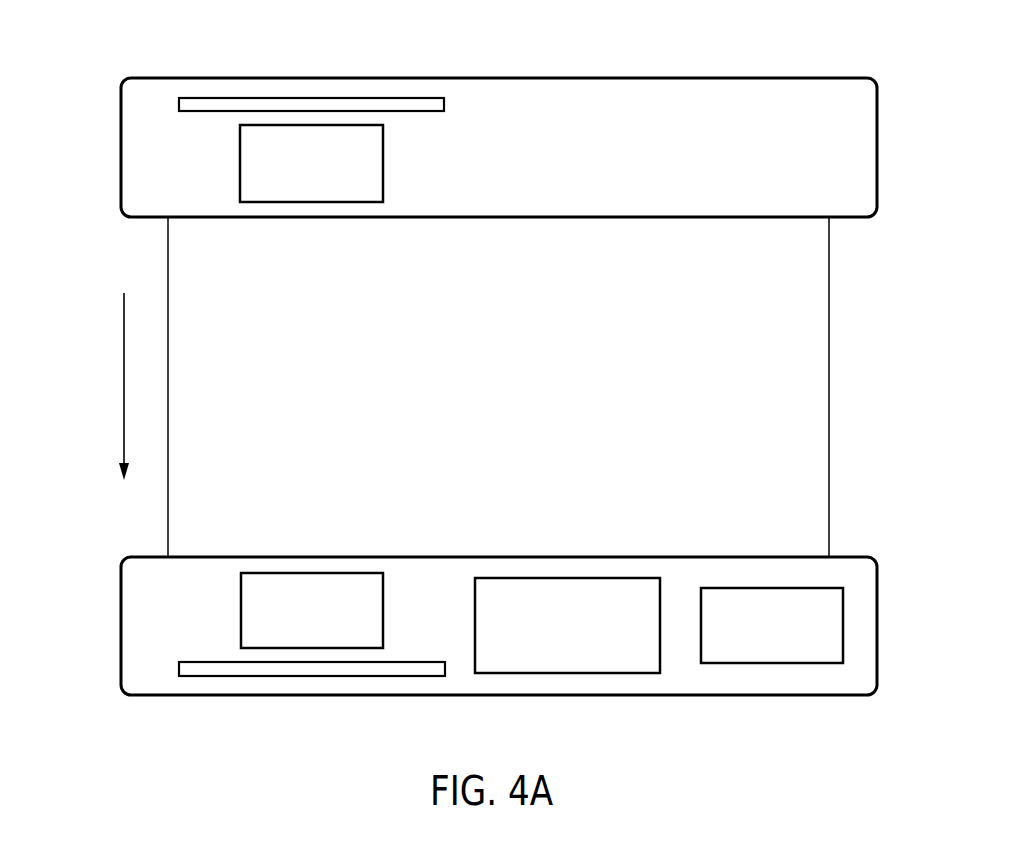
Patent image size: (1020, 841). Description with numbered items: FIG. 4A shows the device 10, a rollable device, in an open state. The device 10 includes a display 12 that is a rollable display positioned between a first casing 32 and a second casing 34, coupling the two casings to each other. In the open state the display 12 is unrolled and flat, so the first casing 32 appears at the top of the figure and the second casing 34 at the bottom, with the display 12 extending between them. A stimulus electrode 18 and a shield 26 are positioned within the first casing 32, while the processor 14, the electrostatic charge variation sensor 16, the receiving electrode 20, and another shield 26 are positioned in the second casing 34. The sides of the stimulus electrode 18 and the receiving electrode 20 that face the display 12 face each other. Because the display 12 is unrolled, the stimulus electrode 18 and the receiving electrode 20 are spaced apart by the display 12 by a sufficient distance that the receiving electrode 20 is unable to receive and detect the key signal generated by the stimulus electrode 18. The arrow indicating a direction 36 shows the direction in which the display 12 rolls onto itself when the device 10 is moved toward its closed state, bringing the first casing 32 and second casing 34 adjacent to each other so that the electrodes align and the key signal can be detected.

The device 10 is at (67, 78).
The display 12 is at (829, 370).
The processor 14 is at (770, 663).
The electrostatic charge variation sensor 16 is at (565, 673).
The stimulus electrode 18 is at (282, 125).
The receiving electrode 20 is at (283, 648).
The shield 26 is at (330, 97).
The first casing 32 is at (877, 148).
The second casing 34 is at (877, 620).
The direction 36 is at (122, 381).